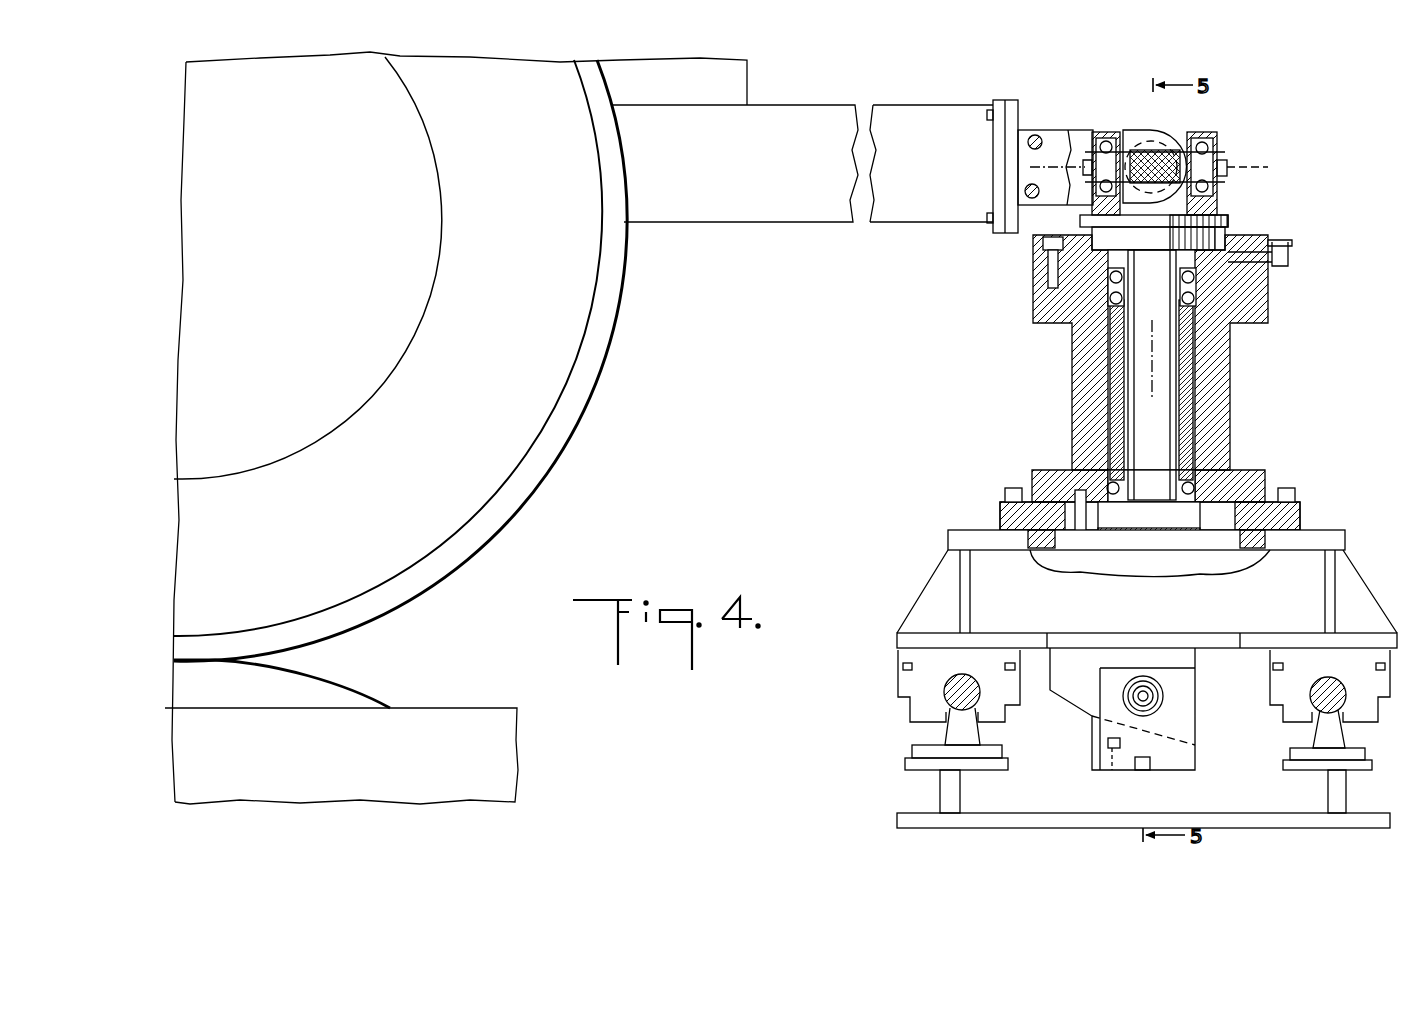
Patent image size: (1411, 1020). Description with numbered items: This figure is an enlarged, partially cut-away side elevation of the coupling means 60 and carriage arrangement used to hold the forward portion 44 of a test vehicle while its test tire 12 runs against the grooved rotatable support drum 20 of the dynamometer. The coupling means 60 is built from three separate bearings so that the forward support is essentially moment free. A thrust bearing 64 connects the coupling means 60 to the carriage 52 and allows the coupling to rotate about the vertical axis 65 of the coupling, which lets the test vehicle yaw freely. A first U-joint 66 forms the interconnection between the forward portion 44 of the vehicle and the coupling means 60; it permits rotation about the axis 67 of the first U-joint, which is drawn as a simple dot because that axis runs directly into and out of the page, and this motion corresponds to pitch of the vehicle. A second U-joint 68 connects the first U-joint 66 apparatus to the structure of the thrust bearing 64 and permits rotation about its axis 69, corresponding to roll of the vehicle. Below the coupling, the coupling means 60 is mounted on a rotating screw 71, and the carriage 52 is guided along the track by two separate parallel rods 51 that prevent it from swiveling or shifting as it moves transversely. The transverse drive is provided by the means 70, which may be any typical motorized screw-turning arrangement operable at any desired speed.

The test tire 12 is at (603, 300).
The rotatable support drum 20 is at (360, 692).
The forward portion of the vehicle 44 is at (924, 96).
The parallel rods 51 is at (944, 692).
The carriage 52 is at (962, 528).
The coupling means 60 is at (1000, 287).
The thrust bearing 64 is at (1228, 236).
The axis of the coupling 65 is at (1148, 405).
The first U-joint 66 is at (1160, 140).
The axis of the first U-joint 67 is at (1150, 165).
The second U-joint 68 is at (1210, 155).
The axis of the second U-joint 69 is at (1232, 170).
The means for inducing transverse movement 70 is at (836, 492).
The rotating screw 71 is at (1138, 700).